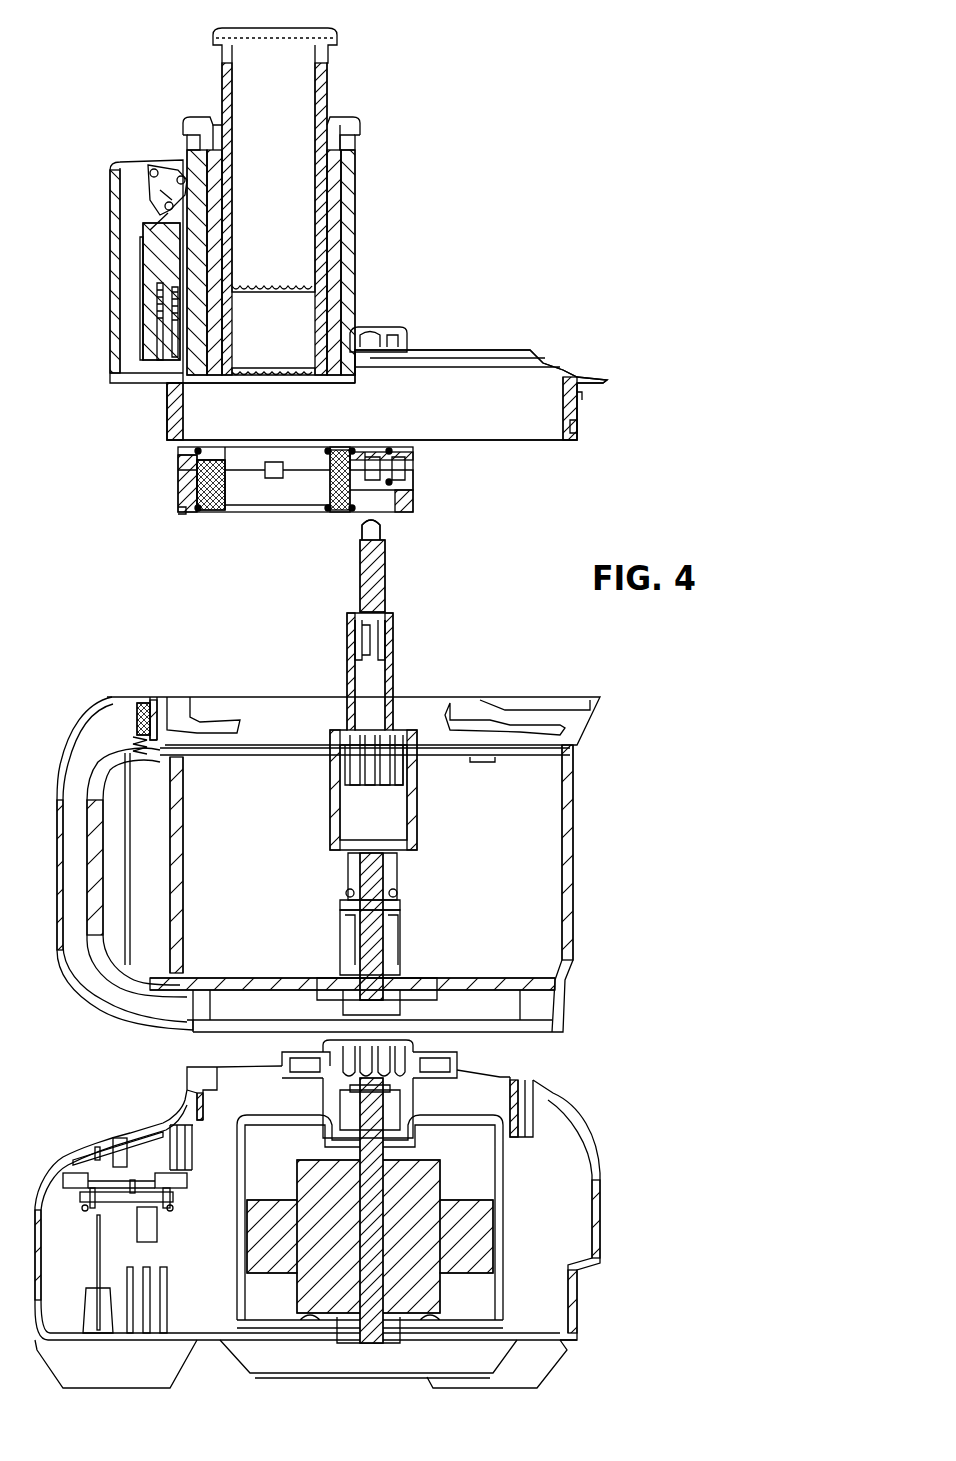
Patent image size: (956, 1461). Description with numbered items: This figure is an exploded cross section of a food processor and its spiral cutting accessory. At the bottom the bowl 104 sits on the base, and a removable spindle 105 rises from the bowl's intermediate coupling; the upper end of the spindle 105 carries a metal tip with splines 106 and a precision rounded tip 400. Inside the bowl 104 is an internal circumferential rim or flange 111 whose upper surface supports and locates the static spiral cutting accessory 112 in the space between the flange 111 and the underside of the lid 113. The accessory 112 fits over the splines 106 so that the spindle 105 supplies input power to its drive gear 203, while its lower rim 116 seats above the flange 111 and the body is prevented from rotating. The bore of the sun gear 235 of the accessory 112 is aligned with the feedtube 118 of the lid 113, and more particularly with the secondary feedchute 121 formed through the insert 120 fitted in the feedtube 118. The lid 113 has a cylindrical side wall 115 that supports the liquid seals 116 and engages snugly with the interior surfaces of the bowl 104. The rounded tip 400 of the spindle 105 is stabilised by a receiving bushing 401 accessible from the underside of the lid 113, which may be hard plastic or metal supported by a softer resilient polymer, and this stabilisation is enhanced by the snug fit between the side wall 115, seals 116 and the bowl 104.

The secondary feedchute 121 is at (345, 150).
The feedtube 118 is at (355, 248).
The receiving bushing 401 is at (393, 450).
The insert 120 is at (350, 308).
The drive gear 203 is at (370, 327).
The lid 113 is at (540, 362).
The cylindrical side wall 115 is at (582, 394).
The liquid seal 116 is at (580, 432).
The static spiral cutting accessory 112 is at (405, 496).
The precision rounded tip 400 is at (378, 540).
The splines 106 is at (372, 580).
The sun gear 235 is at (327, 487).
The spindle 105 is at (380, 682).
The internal rim or flange 111 is at (540, 793).
The bowl 104 is at (540, 853).